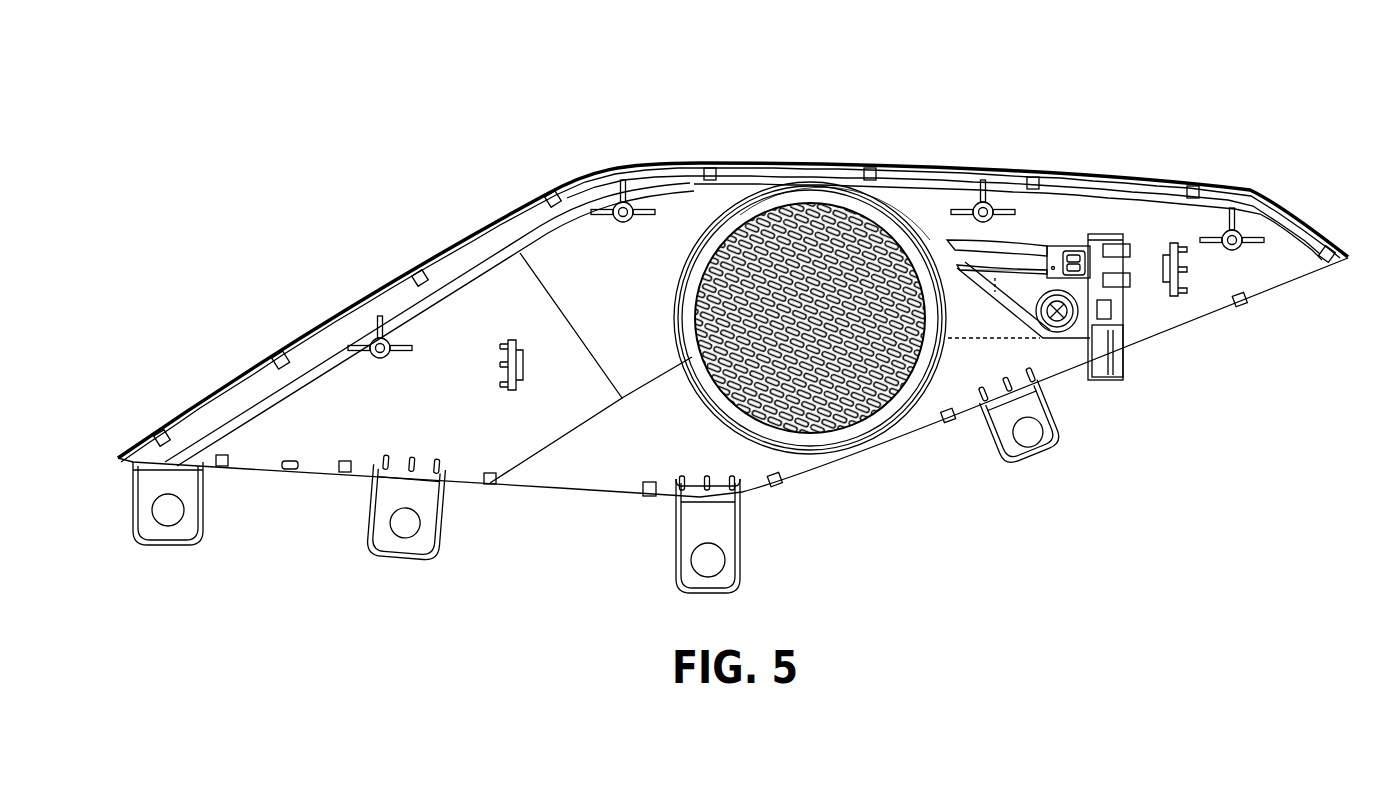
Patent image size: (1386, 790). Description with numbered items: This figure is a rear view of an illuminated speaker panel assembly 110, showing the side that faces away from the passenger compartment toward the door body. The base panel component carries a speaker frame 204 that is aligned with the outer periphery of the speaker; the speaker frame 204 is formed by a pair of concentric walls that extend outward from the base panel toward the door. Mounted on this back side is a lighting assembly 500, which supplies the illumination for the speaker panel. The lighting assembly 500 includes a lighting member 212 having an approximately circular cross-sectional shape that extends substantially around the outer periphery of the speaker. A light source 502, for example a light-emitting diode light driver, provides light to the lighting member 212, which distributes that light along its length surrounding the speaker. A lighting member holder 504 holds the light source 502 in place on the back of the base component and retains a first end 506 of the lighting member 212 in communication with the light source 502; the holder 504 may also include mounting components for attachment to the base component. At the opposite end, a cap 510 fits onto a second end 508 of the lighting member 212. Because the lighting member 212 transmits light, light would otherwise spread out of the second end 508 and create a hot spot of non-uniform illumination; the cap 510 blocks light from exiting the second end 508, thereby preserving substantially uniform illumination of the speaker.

The illuminated speaker panel assembly 110 is at (358, 130).
The speaker frame 204 is at (913, 250).
The lighting member 212 is at (845, 447).
The lighting assembly 500 is at (1048, 215).
The light source 502 is at (1108, 362).
The lighting member holder 504 is at (1075, 335).
The first end 506 is at (1056, 258).
The second end 508 is at (895, 226).
The cap 510 is at (912, 252).